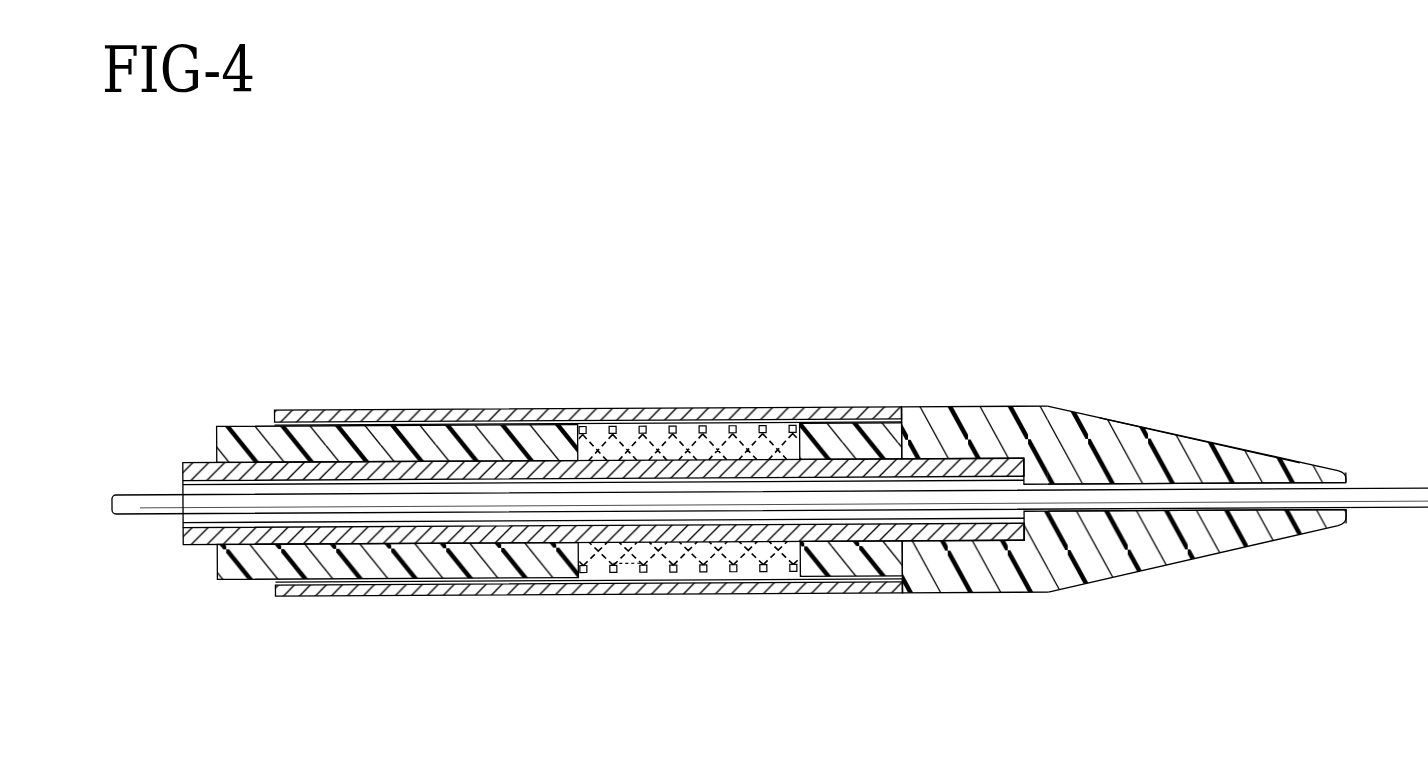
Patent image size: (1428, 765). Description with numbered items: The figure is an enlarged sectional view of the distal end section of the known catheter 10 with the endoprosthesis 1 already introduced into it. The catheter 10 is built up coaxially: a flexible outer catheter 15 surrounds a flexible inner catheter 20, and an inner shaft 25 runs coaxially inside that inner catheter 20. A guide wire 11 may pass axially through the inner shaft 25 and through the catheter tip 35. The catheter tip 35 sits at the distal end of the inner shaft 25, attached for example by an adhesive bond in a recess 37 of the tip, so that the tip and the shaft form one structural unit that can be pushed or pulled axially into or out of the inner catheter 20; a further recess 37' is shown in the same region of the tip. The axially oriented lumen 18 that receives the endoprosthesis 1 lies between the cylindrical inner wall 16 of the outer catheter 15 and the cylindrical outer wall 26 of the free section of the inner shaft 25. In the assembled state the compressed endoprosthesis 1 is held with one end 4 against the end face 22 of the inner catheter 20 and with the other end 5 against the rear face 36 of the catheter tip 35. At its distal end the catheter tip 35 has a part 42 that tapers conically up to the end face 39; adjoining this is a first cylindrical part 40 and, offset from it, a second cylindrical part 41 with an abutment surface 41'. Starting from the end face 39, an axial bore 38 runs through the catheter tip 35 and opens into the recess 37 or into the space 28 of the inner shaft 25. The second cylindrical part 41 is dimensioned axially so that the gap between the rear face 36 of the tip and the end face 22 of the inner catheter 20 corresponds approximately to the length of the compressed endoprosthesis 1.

The catheter 10 is at (176, 600).
The guide wire 11 is at (150, 516).
The outer catheter 15 is at (343, 411).
The inner catheter 20 is at (378, 428).
The inner shaft 25 is at (440, 464).
The space of the inner shaft 28 is at (220, 522).
The endoprosthesis 1 is at (686, 420).
The end of the endoprosthesis 4 is at (605, 428).
The other end of the endoprosthesis 5 is at (778, 430).
The lumen 18 is at (723, 430).
The cylindrical inner wall 16 is at (710, 578).
The end face of the inner catheter 22 is at (590, 566).
The cylindrical outer wall 26 is at (630, 562).
The rear face of the catheter tip 36 is at (780, 578).
The second cylindrical part 41 is at (851, 442).
The abutment surface 41' is at (897, 427).
The first cylindrical part 40 is at (983, 428).
The conically tapered part 42 is at (1140, 440).
The catheter tip 35 is at (1205, 428).
The axial bore 38 is at (1268, 478).
The end face 39 is at (1352, 482).
The recess 37 is at (951, 603).
The inner tube distal end 37' is at (1045, 610).